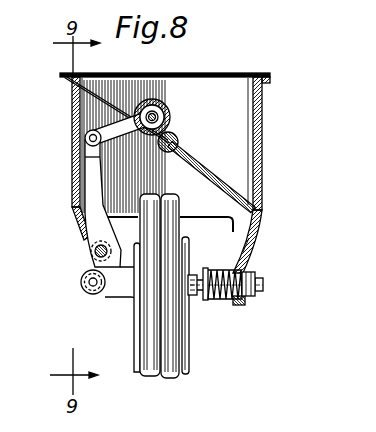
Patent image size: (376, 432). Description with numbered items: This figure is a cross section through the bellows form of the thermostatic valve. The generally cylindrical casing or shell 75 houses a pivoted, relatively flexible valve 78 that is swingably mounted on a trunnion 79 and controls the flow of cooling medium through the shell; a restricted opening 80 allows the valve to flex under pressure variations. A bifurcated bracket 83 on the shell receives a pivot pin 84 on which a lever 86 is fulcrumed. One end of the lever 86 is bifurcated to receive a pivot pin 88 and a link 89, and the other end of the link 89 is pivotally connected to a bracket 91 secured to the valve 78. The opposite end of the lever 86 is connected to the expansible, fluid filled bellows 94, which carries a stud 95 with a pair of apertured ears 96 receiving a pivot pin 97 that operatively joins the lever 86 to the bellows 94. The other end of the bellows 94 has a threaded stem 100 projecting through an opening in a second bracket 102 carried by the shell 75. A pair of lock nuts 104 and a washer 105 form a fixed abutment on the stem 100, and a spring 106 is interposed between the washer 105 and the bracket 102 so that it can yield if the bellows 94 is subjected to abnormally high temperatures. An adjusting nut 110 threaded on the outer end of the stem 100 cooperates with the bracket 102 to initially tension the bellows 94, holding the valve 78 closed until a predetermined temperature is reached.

The casing 75 is at (263, 143).
The valve 78 is at (262, 172).
The trunnion 79 is at (175, 131).
The restricted opening 80 is at (263, 200).
The bracket 83 is at (77, 226).
The pivot pin 84 is at (90, 257).
The lever 86 is at (90, 179).
The pivot pin 88 is at (90, 138).
The link 89 is at (110, 121).
The bracket 91 is at (149, 98).
The expansible bellows 94 is at (156, 376).
The stud 95 is at (123, 294).
The ears 96 is at (81, 287).
The pivot pin 97 is at (88, 300).
The threaded stem 100 is at (263, 283).
The second bracket 102 is at (244, 259).
The lock nuts 104 is at (198, 302).
The washer 105 is at (215, 302).
The spring 106 is at (250, 308).
The adjusting nut 110 is at (258, 298).